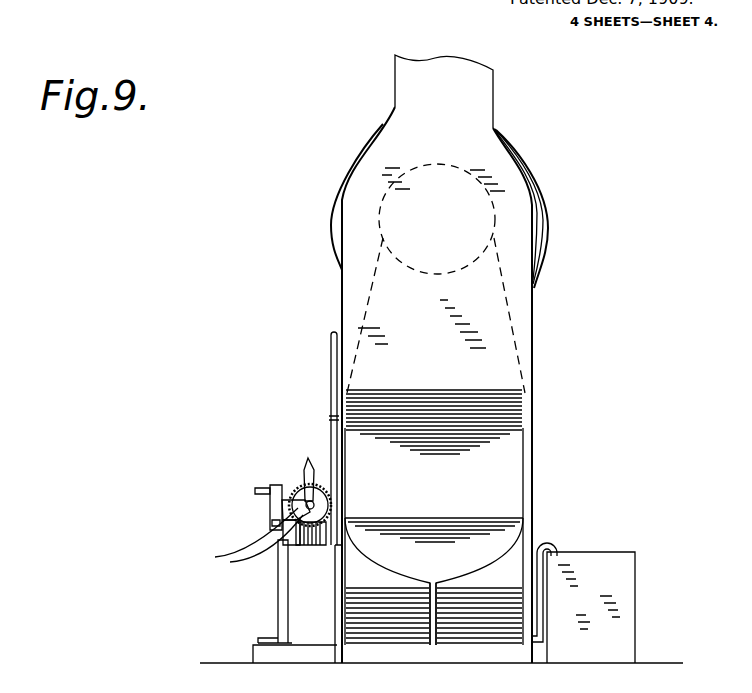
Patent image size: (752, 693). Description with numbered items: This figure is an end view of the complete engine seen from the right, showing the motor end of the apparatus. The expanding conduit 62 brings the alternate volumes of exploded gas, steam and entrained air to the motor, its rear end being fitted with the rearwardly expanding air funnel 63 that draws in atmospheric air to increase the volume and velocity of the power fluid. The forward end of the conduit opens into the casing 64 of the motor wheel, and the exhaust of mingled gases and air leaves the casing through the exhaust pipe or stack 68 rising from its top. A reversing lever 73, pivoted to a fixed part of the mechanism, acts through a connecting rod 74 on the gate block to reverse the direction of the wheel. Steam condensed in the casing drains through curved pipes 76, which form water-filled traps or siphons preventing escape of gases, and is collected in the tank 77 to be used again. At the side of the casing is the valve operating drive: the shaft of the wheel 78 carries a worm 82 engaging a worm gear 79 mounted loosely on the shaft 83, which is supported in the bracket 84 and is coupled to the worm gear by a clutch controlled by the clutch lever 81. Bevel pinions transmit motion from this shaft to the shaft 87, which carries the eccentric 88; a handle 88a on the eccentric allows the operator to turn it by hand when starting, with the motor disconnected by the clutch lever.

The expanding conduit 62 is at (505, 264).
The air funnel 63 is at (533, 175).
The casing 64 is at (434, 581).
The exhaust pipe or stack 68 is at (444, 91).
The reversing lever 73 is at (334, 440).
The connecting rod 74 is at (331, 418).
The pipes 76 is at (556, 547).
The tank 77 is at (622, 584).
The shaft of the wheel 78 is at (273, 581).
The worm gear 79 is at (298, 497).
The clutch lever 81 is at (303, 486).
The worm 82 is at (318, 546).
The shaft 83 is at (286, 493).
The bracket 84 is at (253, 547).
The shaft 87 is at (270, 508).
The eccentric 88 is at (277, 524).
The handle 88a is at (270, 490).